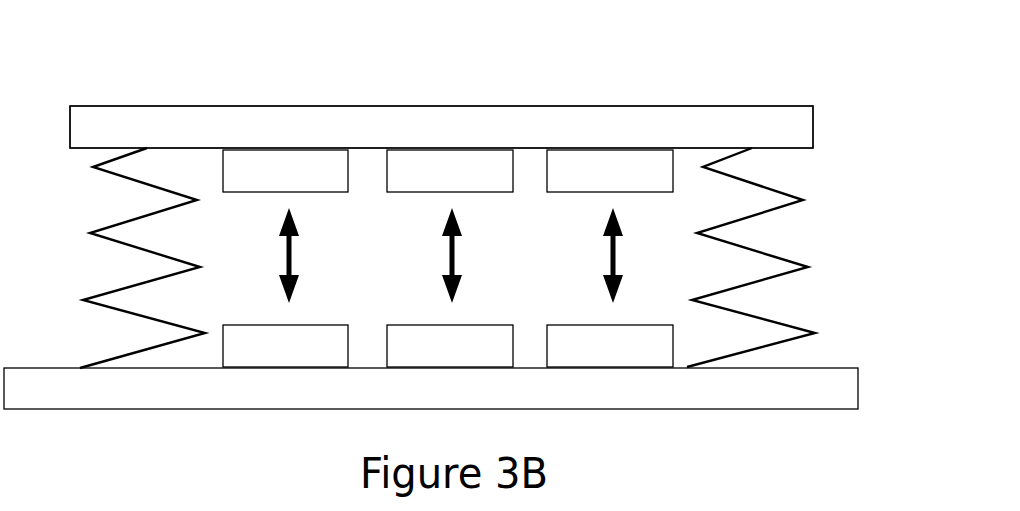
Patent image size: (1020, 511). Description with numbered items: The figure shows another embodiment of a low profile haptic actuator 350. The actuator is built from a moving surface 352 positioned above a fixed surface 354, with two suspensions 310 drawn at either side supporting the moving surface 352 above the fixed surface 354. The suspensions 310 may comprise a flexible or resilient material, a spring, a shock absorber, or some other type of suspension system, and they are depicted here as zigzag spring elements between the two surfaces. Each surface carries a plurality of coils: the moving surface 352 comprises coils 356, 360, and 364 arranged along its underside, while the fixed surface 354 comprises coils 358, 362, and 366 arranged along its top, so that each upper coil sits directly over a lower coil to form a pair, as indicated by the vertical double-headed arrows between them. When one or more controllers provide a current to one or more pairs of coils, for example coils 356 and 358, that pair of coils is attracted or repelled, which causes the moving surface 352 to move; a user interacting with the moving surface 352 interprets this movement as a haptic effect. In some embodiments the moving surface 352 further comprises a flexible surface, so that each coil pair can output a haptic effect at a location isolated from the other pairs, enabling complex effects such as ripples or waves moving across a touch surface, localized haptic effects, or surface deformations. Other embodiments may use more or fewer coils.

The low profile haptic actuator 350 is at (193, 99).
The moving surface 352 is at (557, 140).
The fixed surface 354 is at (537, 402).
The suspension 310 is at (68, 295).
The coil 356 is at (335, 182).
The coil 358 is at (335, 358).
The coil 360 is at (498, 182).
The coil 362 is at (498, 358).
The coil 364 is at (658, 182).
The coil 366 is at (658, 358).